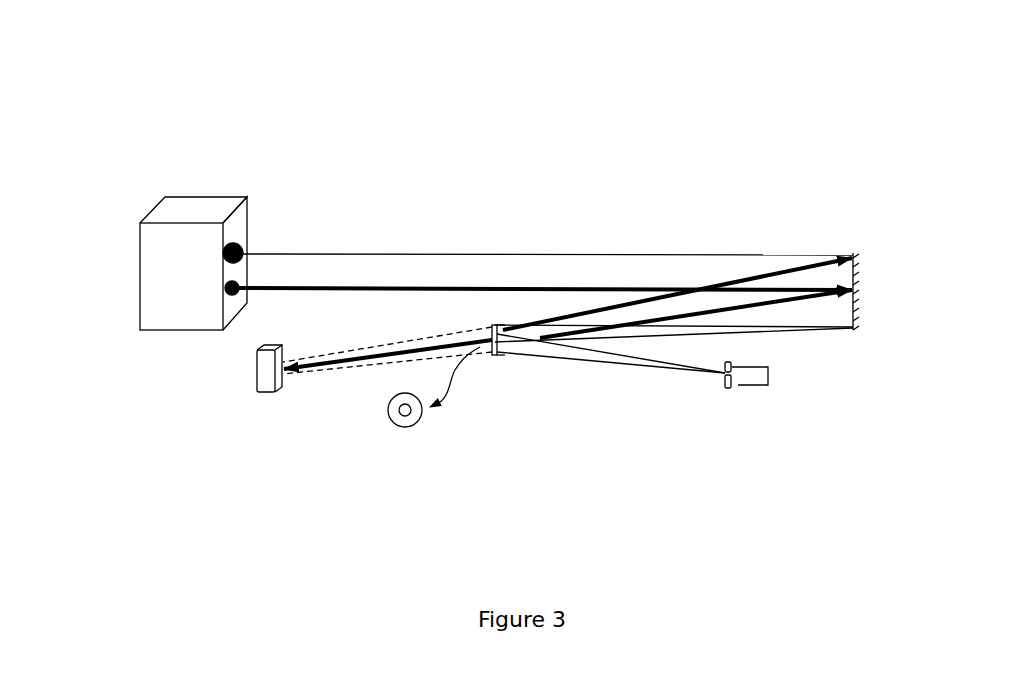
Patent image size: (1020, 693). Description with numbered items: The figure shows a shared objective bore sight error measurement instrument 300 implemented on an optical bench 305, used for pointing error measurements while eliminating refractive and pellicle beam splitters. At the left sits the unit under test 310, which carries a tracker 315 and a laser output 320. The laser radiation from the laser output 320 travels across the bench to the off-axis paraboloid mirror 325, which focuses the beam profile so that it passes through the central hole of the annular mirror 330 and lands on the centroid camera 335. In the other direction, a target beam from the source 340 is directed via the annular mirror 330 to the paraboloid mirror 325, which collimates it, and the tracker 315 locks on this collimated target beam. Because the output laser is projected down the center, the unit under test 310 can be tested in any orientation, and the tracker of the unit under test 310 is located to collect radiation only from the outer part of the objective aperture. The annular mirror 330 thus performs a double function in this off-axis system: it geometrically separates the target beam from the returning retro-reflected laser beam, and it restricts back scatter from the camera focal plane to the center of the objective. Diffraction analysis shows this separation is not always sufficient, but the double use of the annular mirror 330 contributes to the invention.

The shared objective bore sight error measurement instrument 300 is at (67, 46).
The optical bench 305 is at (858, 406).
The unit under test 310 is at (170, 194).
The tracker 315 is at (246, 233).
The laser output 320 is at (222, 298).
The off-axis paraboloid mirror 325 is at (860, 250).
The annular mirror 330 is at (500, 366).
The centroid camera 335 is at (267, 396).
The source 340 is at (756, 391).